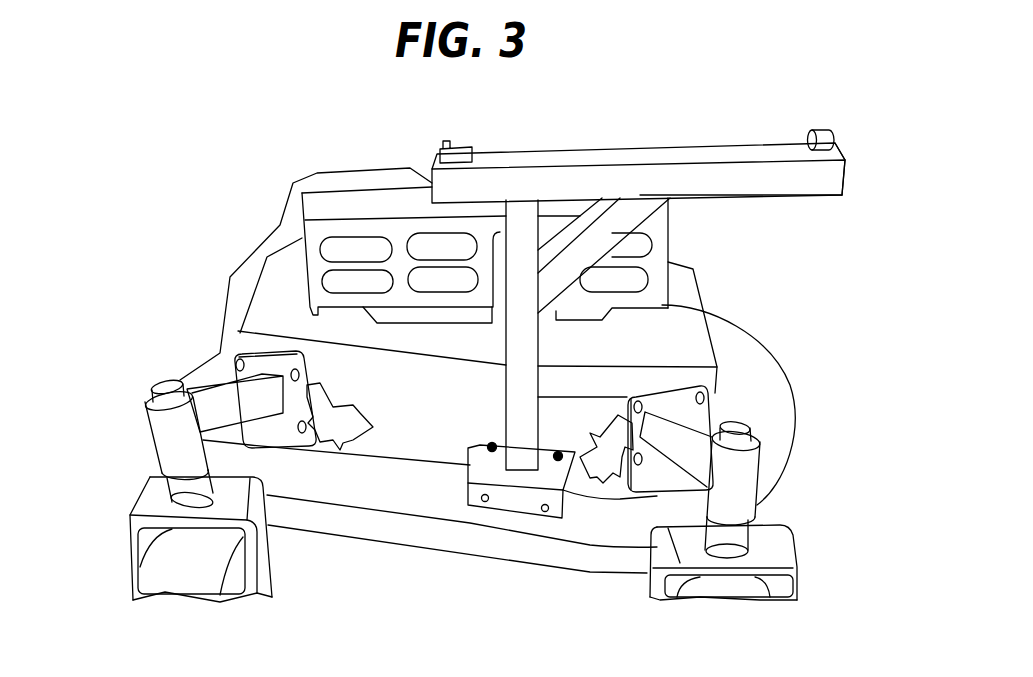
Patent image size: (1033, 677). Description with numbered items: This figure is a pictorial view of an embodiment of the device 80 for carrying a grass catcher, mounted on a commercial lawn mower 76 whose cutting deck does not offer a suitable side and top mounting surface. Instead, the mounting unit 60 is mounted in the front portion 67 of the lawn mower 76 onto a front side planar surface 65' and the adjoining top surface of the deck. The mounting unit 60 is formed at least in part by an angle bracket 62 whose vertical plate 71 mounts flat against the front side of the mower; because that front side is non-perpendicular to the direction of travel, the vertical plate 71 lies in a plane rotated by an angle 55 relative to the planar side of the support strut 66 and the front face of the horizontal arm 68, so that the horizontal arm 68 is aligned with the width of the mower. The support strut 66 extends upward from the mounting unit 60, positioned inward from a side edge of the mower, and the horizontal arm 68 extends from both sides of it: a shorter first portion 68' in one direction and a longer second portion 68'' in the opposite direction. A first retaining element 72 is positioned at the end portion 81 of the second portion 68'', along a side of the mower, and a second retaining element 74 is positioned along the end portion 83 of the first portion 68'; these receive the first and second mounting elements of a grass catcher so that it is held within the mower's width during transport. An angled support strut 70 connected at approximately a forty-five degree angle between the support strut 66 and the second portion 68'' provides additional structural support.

The angle 55 is at (470, 463).
The mounting unit 60 is at (470, 487).
The angle bracket 62 is at (571, 515).
The front side planar surface 65' is at (462, 556).
The support strut 66 is at (500, 398).
The front portion 67 is at (338, 535).
The horizontal arm 68 is at (638, 150).
The first portion 68' is at (347, 255).
The second portion 68'' is at (741, 223).
The angled support strut 70 is at (595, 250).
The vertical plate 71 is at (520, 503).
The first retaining element 72 is at (827, 130).
The second retaining element 74 is at (445, 142).
The lawn mower 76 is at (128, 421).
The device 80 is at (597, 118).
The end portion 81 is at (853, 168).
The end portion 83 is at (380, 167).